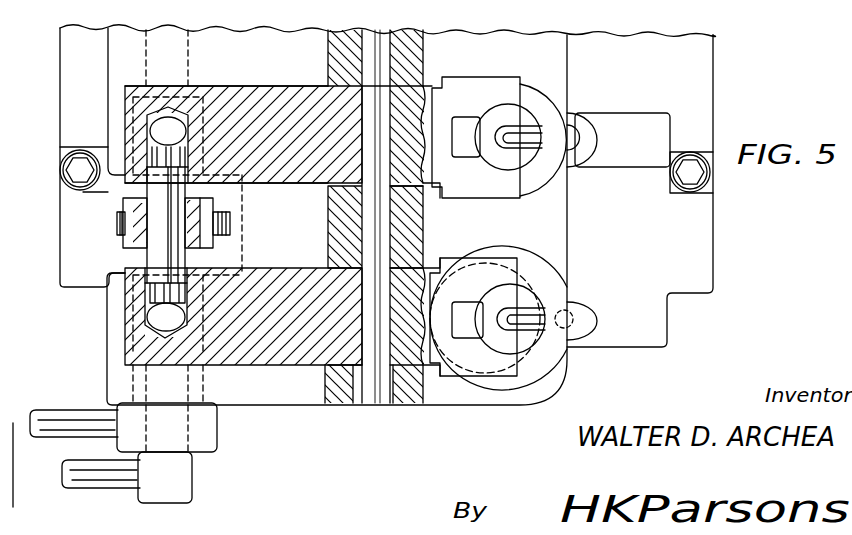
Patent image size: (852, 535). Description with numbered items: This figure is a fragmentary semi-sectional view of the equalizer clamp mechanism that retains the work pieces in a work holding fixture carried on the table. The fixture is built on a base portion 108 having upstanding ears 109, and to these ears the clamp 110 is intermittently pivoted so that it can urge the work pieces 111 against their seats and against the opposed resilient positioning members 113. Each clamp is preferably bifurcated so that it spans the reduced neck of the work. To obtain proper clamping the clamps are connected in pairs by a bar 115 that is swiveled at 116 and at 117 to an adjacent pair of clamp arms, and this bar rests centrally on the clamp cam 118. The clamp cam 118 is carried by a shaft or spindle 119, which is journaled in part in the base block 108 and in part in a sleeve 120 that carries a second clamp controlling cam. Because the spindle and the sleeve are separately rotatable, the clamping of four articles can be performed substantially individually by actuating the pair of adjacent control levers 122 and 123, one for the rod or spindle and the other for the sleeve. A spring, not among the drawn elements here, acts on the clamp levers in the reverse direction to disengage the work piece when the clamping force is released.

The base portion 108 is at (702, 228).
The upstanding ears 109 is at (413, 218).
The clamp 110 is at (300, 357).
The work pieces 111 is at (547, 282).
The resilient positioning members 113 is at (548, 167).
The bar 115 is at (157, 254).
The swivel 116 is at (157, 135).
The swivel 117 is at (157, 314).
The clamp cam 118 is at (231, 224).
The spindle 119 is at (162, 44).
The sleeve 120 is at (204, 422).
The control lever 122 is at (120, 488).
The control lever 123 is at (70, 436).